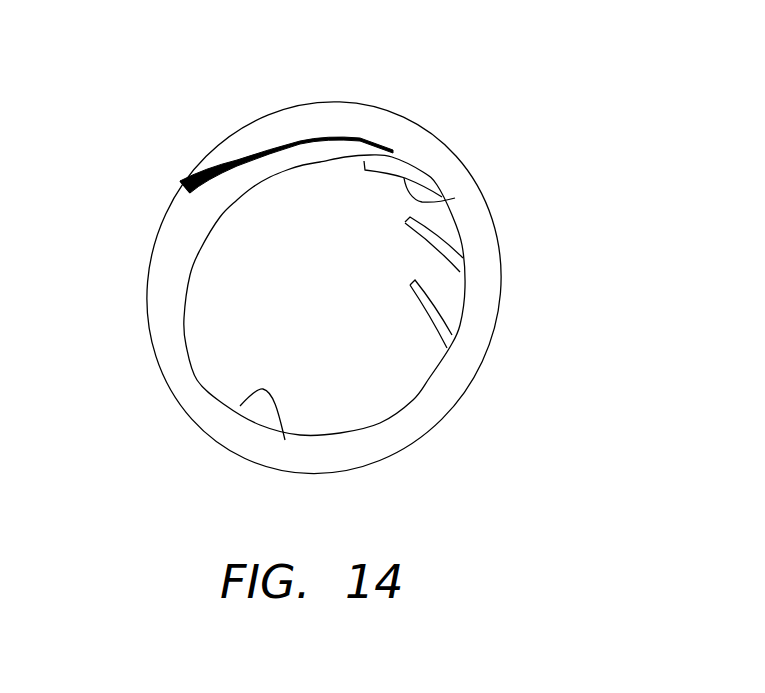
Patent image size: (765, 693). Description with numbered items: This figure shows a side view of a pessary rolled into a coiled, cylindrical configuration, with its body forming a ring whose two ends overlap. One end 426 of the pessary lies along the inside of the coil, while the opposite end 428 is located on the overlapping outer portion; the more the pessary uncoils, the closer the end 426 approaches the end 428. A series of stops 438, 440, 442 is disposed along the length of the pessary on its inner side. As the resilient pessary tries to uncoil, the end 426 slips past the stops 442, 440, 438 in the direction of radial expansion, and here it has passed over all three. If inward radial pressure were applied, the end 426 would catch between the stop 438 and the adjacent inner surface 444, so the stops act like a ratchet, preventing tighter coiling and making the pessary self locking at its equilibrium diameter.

The end 426 is at (397, 158).
The end 428 is at (186, 190).
The stop 438 is at (455, 198).
The stop 440 is at (438, 236).
The stop 442 is at (422, 303).
The inner surface 444 is at (285, 440).